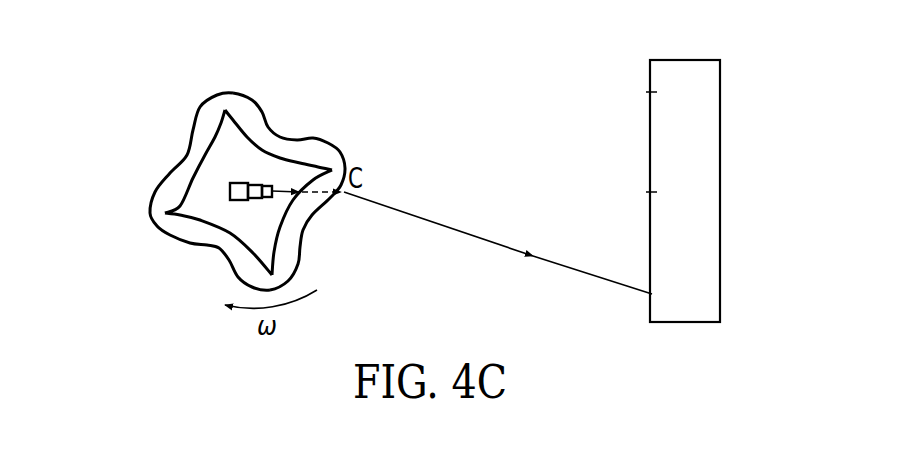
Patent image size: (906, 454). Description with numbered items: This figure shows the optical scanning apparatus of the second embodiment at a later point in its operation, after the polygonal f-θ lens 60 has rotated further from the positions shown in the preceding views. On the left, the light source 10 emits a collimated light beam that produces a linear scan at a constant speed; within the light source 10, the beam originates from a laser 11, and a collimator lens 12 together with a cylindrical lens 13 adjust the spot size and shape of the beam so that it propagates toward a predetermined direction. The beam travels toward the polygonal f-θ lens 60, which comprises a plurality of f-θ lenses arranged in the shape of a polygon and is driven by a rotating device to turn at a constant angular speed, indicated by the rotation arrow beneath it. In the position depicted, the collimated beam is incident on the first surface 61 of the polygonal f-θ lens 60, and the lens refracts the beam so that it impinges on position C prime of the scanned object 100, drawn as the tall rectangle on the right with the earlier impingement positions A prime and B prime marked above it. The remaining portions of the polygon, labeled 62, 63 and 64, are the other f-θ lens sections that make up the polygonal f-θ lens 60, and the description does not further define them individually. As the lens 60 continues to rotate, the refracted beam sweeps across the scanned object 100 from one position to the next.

The light source 10 is at (147, 162).
The laser 11 is at (230, 188).
The collimator lens 12 is at (250, 186).
The cylindrical lens 13 is at (262, 188).
The polygonal f-θ lens 60 is at (261, 165).
The first surface 61 is at (297, 250).
The second lens section 62 is at (247, 112).
The third lens section 63 is at (210, 118).
The fourth lens section 64 is at (183, 233).
The scanned object 100 is at (718, 60).